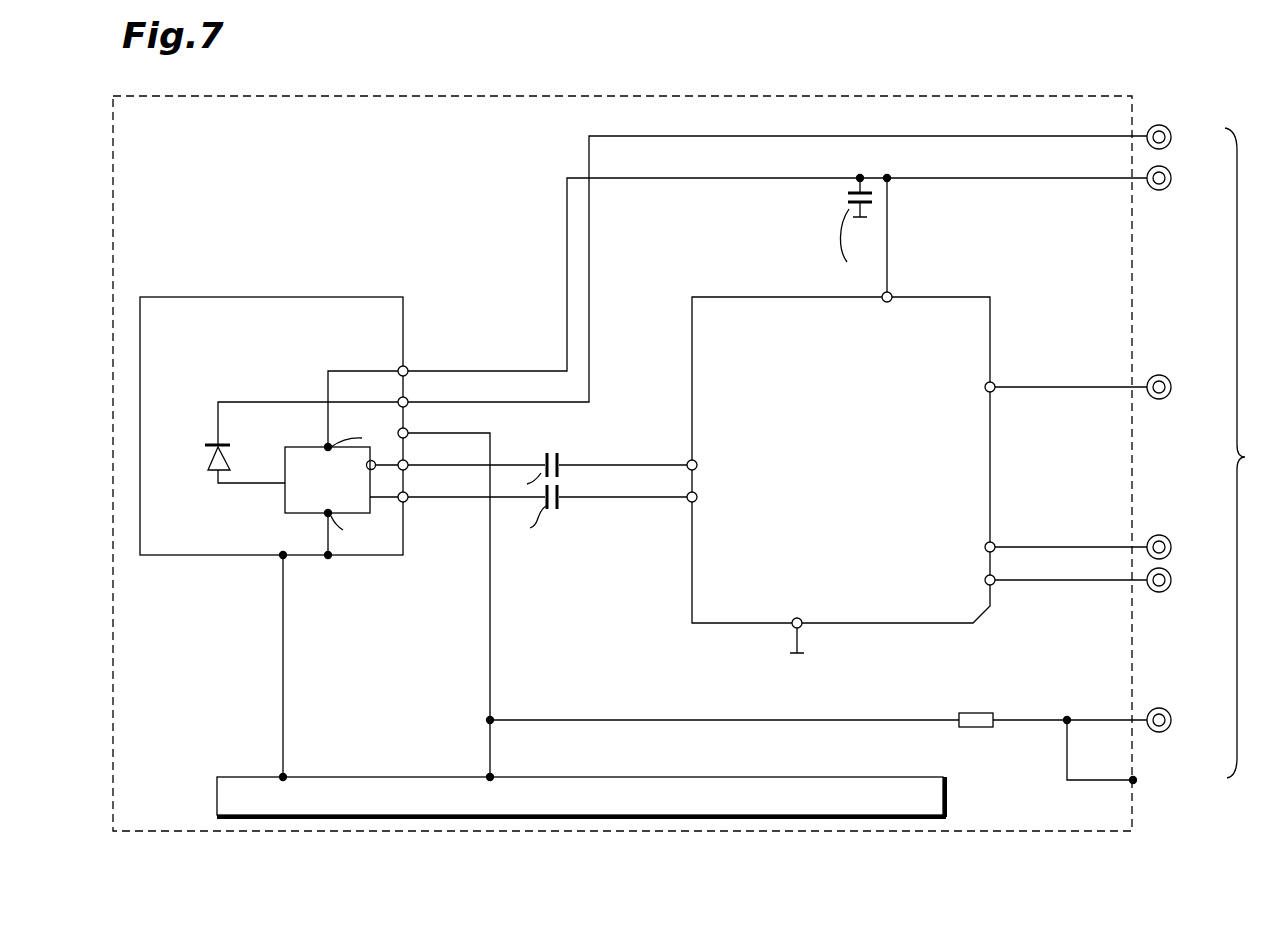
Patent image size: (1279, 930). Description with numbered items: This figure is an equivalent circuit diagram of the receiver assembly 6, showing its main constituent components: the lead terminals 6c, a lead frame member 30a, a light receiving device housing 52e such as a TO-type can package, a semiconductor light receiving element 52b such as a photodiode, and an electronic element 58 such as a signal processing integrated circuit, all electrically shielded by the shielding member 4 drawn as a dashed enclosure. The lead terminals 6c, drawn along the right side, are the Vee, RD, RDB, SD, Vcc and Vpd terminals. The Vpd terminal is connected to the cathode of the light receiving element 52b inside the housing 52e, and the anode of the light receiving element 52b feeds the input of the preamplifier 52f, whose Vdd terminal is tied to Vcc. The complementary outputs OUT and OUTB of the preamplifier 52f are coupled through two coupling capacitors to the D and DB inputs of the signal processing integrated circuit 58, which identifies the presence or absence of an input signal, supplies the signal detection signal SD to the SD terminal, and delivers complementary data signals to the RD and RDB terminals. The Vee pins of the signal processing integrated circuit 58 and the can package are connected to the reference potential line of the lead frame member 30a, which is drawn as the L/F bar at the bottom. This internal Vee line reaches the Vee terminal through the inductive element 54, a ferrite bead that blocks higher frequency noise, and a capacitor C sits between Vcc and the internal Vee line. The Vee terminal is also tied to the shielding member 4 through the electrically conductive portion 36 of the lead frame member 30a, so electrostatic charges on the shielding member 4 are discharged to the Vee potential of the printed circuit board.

The shielding member 4 is at (1133, 113).
The receiver assembly 6 is at (481, 183).
The lead terminals 6c is at (1211, 451).
The light receiving device housing 52e is at (185, 297).
The semiconductor light receiving element 52b is at (209, 470).
The preamplifier 52f is at (285, 498).
The signal processing integrated circuit 58 is at (692, 578).
The inductive element 54 is at (996, 715).
The electrically conductive portion 36 is at (1066, 748).
The lead frame member 30a is at (410, 777).